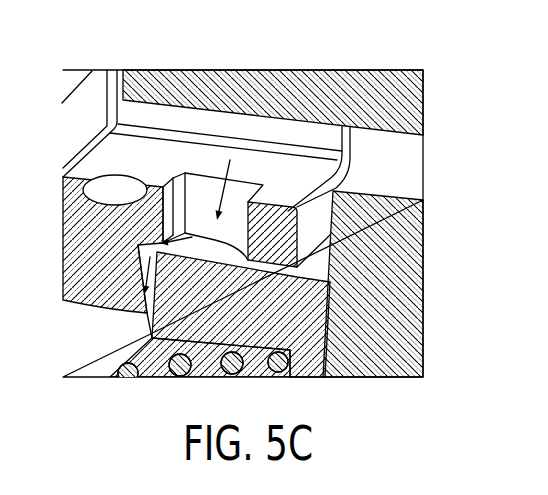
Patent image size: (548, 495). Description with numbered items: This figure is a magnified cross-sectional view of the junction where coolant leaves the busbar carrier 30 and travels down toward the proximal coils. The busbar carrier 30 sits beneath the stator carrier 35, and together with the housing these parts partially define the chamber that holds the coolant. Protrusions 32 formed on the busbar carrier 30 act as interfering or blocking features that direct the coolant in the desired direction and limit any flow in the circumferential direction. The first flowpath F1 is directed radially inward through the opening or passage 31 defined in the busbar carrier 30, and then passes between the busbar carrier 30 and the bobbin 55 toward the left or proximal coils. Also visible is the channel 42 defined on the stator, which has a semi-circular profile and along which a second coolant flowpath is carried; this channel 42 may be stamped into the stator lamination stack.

The busbar carrier 30 is at (138, 113).
The opening or passage 31 is at (218, 160).
The stator carrier 35 is at (231, 97).
The first flowpath F1 is at (233, 174).
The protrusions 32 is at (322, 135).
The channel 42 is at (407, 157).
The bobbin 55 is at (320, 297).